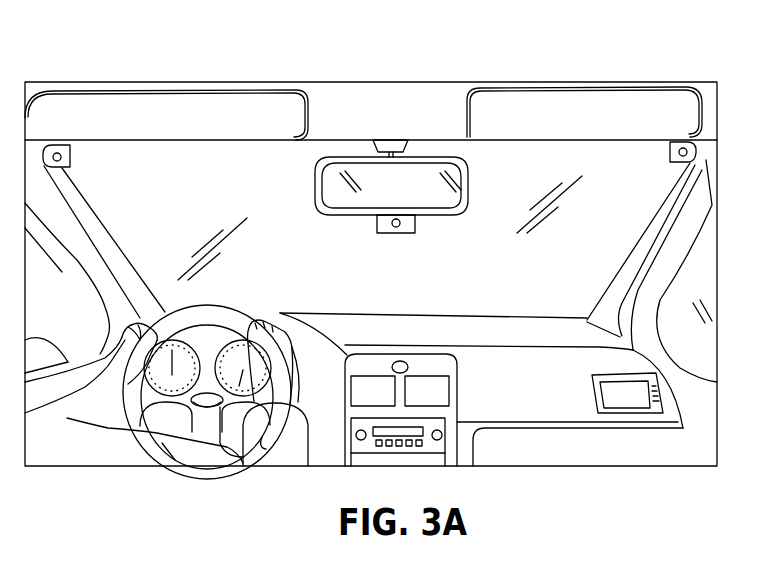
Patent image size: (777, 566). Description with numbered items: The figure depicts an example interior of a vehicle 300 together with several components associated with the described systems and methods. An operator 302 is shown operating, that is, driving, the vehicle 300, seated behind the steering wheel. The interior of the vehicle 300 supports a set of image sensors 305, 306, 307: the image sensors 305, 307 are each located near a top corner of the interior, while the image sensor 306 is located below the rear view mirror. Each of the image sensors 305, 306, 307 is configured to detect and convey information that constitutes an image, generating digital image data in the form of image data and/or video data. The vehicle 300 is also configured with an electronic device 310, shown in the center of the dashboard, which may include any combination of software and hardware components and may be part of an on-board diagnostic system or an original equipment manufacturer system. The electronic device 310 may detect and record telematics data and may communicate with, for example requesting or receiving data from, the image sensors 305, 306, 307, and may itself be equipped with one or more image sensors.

The vehicle 300 is at (435, 68).
The operator 302 is at (76, 451).
The image sensor 305 is at (70, 157).
The image sensor 306 is at (397, 233).
The image sensor 307 is at (670, 152).
The electronic device 310 is at (428, 365).